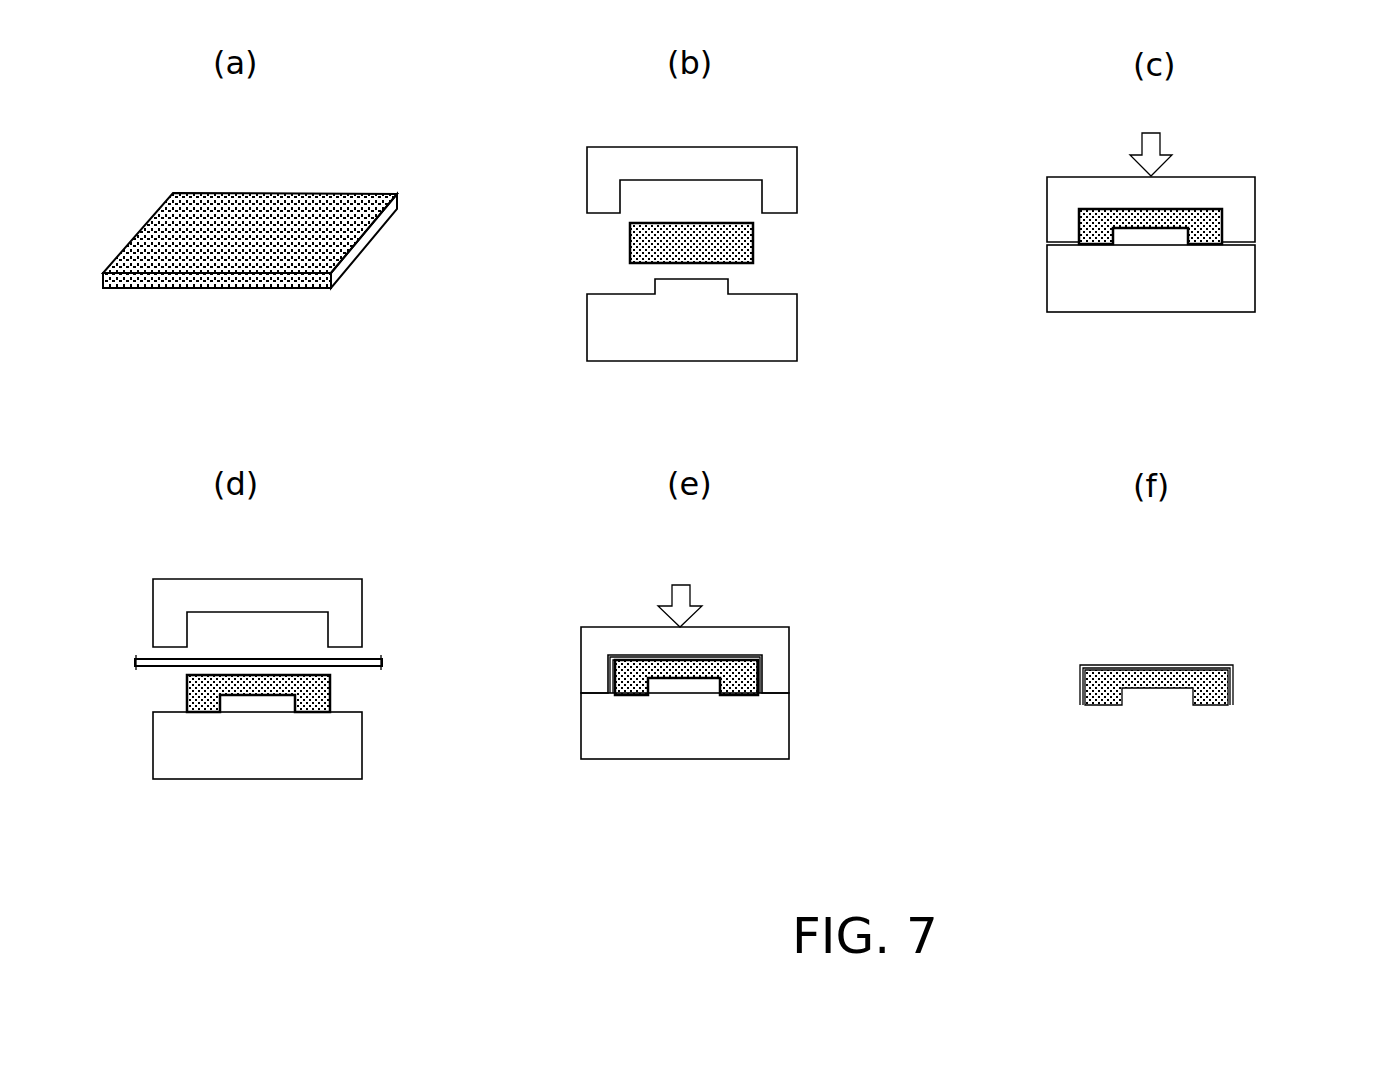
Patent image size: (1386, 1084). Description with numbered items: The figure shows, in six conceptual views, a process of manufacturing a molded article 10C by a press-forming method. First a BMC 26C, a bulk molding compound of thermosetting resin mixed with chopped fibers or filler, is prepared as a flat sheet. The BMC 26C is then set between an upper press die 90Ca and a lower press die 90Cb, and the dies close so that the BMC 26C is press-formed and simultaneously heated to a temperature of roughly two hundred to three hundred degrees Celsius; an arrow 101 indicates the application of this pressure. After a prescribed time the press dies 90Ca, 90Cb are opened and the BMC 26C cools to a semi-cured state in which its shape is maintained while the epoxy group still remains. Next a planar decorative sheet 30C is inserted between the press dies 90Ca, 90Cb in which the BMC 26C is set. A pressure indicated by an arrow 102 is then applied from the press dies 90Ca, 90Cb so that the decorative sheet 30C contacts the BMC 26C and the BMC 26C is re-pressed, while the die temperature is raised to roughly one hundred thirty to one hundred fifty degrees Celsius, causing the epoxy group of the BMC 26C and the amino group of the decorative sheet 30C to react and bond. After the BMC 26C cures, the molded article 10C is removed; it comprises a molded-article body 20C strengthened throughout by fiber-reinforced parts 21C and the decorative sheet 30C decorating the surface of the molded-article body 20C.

The BMC 26C is at (335, 195).
The press die 90Ca is at (720, 158).
The press die 90Cb is at (648, 325).
The decorative sheet 30C is at (367, 660).
The arrow 101 is at (1138, 145).
The arrow 102 is at (668, 597).
The molded article 10C is at (1243, 657).
The fiber-reinforced parts 21C is at (1152, 687).
The molded-article body 20C is at (1207, 710).